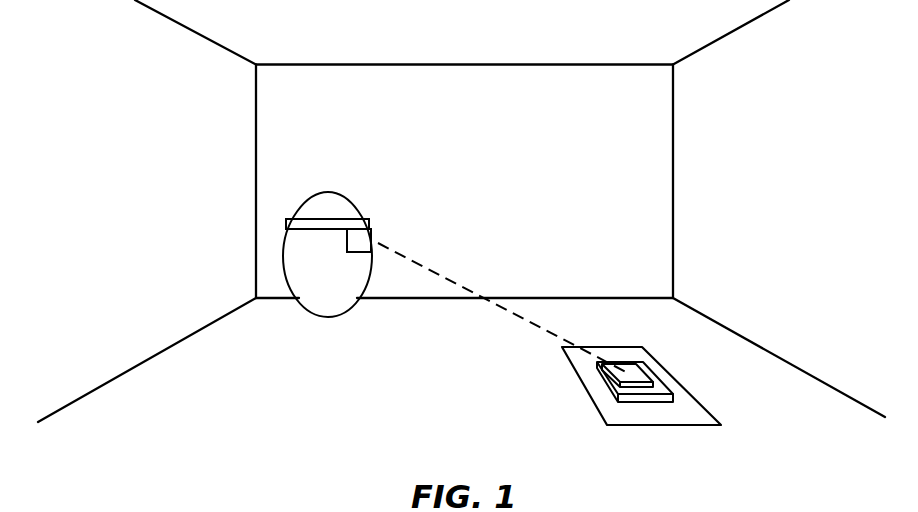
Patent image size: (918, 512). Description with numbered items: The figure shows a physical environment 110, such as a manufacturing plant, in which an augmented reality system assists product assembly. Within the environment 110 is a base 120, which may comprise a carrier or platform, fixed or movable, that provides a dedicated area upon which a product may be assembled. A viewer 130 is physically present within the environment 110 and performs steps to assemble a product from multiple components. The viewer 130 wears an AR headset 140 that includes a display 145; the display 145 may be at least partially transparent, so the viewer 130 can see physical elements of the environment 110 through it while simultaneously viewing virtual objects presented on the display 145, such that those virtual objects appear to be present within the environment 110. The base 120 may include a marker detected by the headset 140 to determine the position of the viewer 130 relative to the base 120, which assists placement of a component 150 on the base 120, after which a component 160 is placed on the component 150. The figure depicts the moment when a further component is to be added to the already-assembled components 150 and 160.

The physical environment 110 is at (649, 282).
The base 120 is at (706, 420).
The viewer 130 is at (336, 199).
The AR headset 140 is at (371, 218).
The display 145 is at (375, 243).
The component 150 is at (659, 390).
The component 160 is at (629, 362).